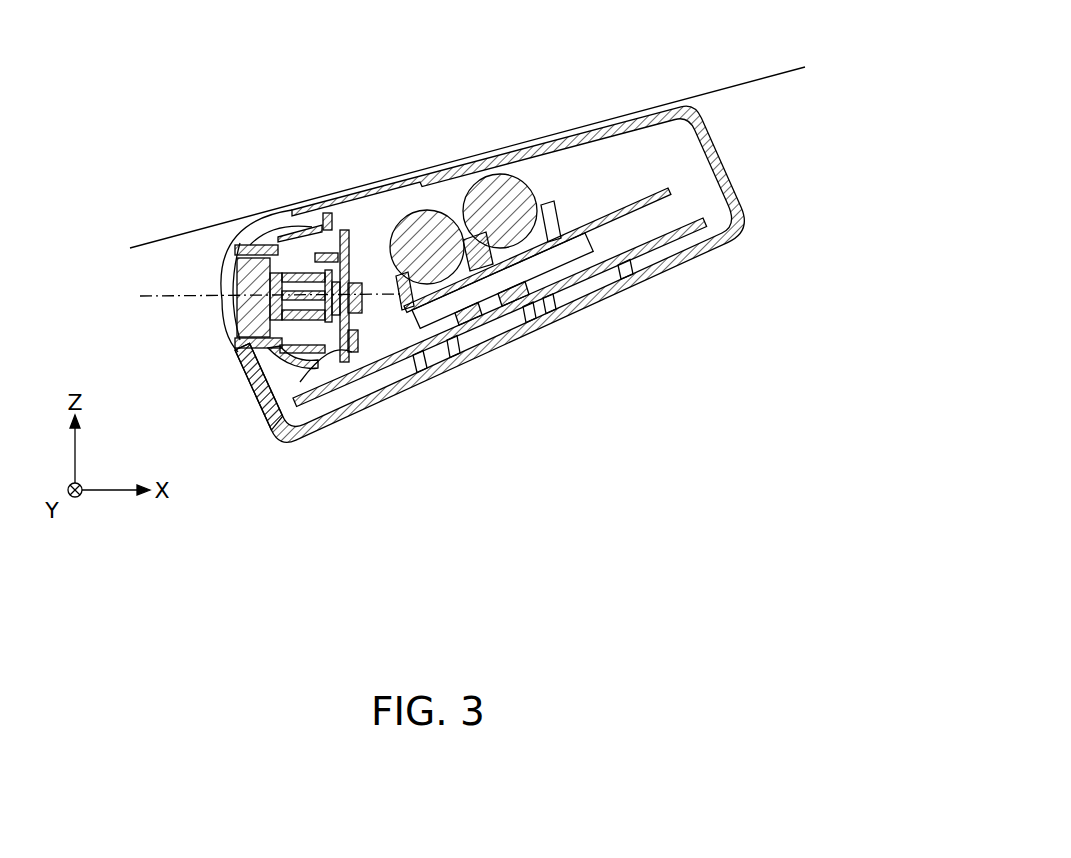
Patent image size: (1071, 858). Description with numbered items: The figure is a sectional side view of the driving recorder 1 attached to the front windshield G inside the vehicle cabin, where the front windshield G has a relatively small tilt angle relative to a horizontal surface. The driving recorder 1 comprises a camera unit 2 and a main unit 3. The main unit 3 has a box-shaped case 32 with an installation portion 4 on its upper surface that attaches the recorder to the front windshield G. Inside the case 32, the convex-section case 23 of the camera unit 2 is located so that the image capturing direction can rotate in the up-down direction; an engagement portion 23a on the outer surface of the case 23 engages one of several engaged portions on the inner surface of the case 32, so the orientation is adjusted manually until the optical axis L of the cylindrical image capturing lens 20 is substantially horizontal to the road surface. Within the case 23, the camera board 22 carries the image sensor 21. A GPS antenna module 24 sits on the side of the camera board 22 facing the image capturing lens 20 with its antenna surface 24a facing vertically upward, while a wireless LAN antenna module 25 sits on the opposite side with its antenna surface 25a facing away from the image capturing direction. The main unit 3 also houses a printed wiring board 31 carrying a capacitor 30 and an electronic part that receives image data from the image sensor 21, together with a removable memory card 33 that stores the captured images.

The driving recorder 1 is at (774, 166).
The camera unit 2 is at (203, 320).
The main unit 3 is at (553, 355).
The installation portion 4 is at (573, 130).
The image capturing lens 20 is at (237, 284).
The image sensor 21 is at (315, 372).
The camera board 22 is at (351, 253).
The case 23 is at (250, 238).
The engagement portion 23a is at (327, 253).
The GPS antenna module 24 is at (339, 246).
The antenna surface 24a is at (300, 233).
The wireless LAN antenna module 25 is at (355, 362).
The antenna surface 25a is at (368, 356).
The capacitor 30 is at (428, 211).
The printed wiring board 31 is at (643, 207).
The case 32 is at (588, 306).
The memory card 33 is at (490, 297).
The front windshield G is at (743, 82).
The optical axis L is at (256, 297).